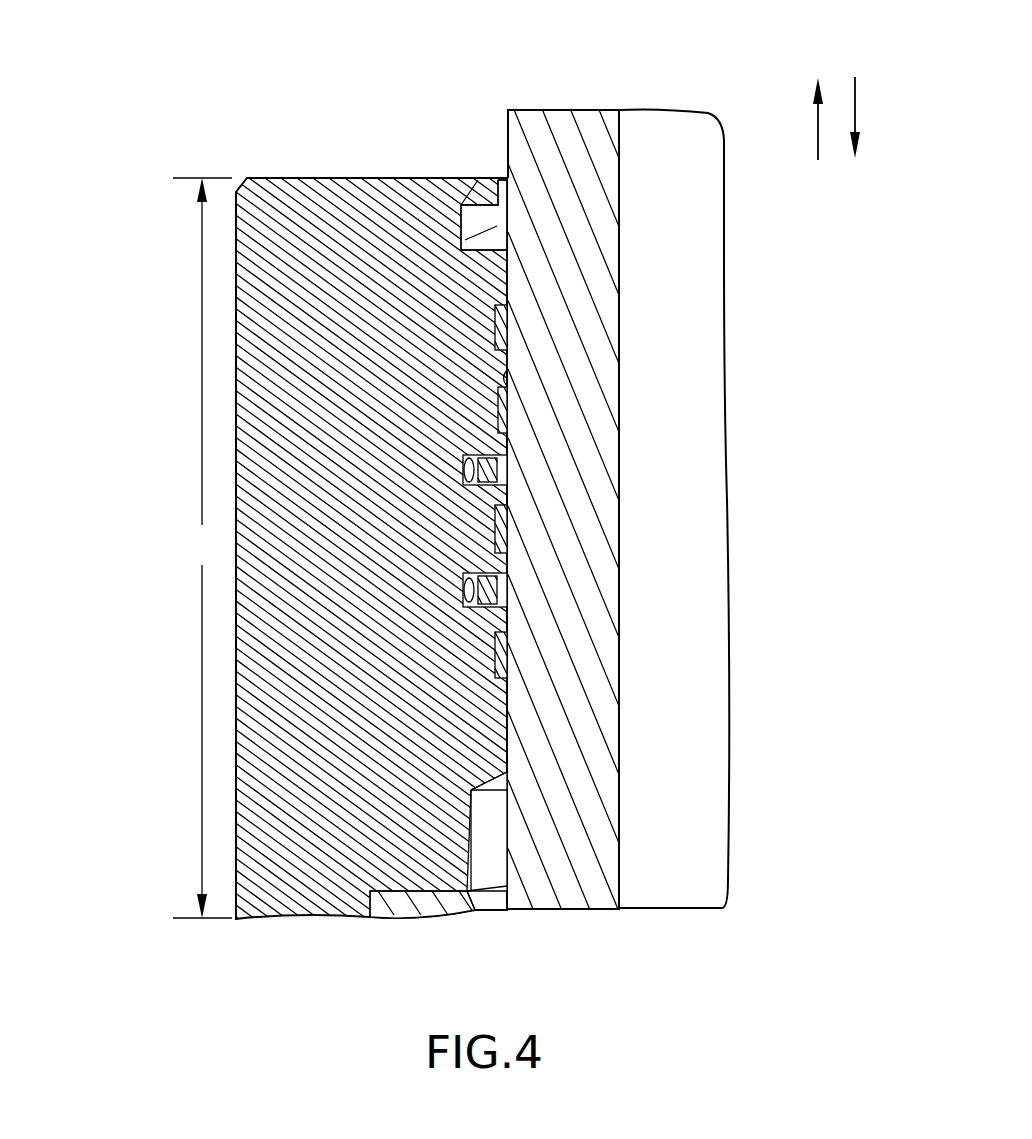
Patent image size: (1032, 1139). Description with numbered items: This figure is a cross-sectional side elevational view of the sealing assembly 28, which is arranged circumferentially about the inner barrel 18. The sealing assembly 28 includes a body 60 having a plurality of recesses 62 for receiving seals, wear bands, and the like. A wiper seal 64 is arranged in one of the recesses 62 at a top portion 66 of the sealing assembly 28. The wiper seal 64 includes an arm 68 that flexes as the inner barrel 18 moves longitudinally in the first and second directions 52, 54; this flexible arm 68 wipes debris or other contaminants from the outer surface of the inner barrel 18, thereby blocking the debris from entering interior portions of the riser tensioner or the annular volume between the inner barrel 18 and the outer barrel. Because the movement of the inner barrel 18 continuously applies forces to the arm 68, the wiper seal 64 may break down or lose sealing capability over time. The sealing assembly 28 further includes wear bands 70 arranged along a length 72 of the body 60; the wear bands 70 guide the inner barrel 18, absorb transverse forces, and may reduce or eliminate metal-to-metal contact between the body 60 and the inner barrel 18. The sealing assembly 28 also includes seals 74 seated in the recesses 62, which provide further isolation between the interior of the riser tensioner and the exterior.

The sealing assembly 28 is at (263, 118).
The inner barrel 18 is at (594, 893).
The wiper seal 64 is at (477, 220).
The arm 68 is at (503, 183).
The wear bands 70 is at (500, 327).
The seals 74 is at (500, 398).
The recesses 62 is at (440, 259).
The length 72 is at (202, 548).
The top portion 66 is at (150, 249).
The body 60 is at (146, 840).
The first direction 52 is at (818, 130).
The second direction 54 is at (857, 100).